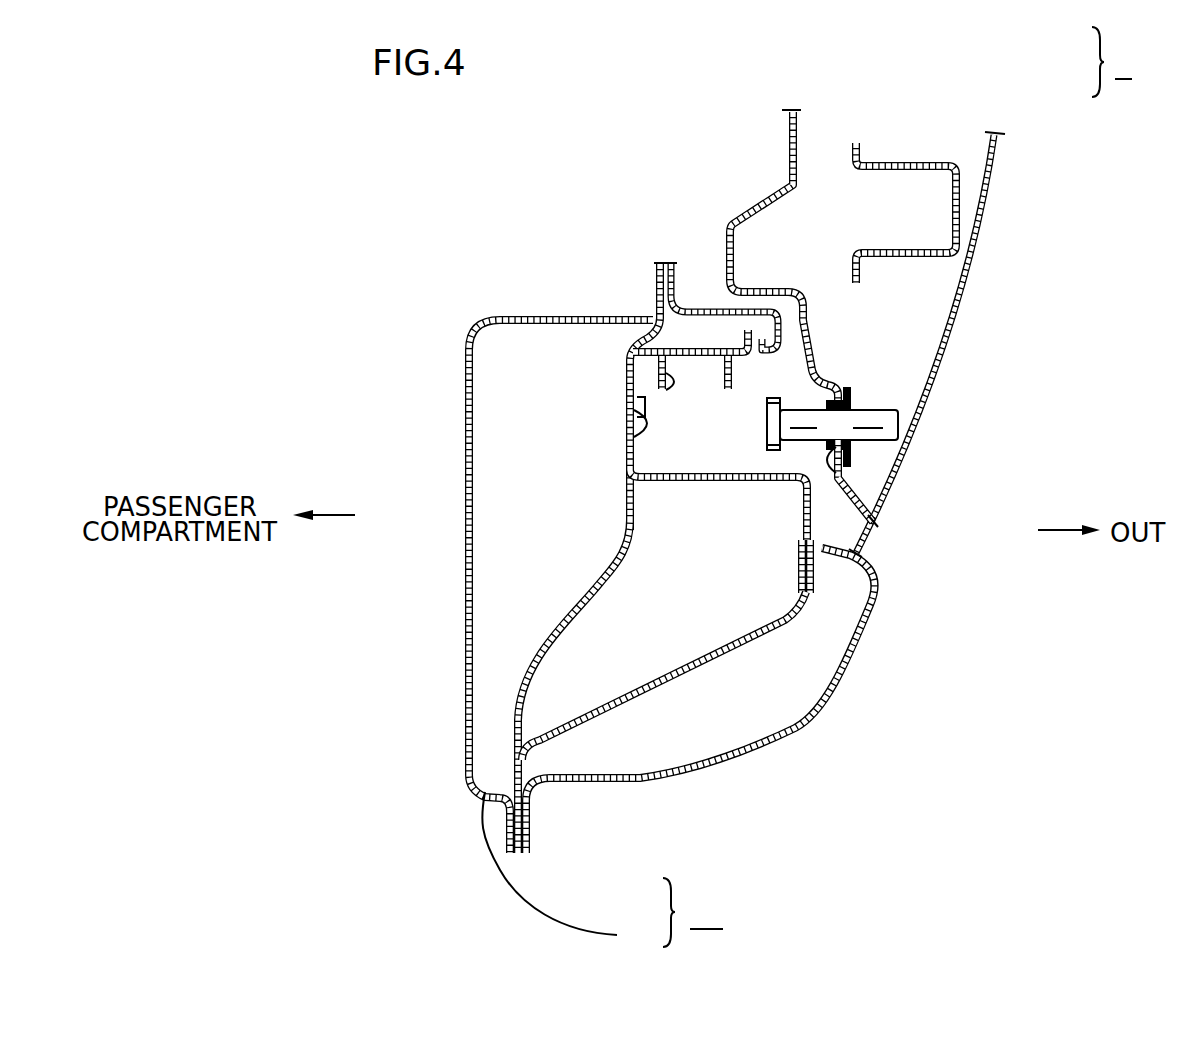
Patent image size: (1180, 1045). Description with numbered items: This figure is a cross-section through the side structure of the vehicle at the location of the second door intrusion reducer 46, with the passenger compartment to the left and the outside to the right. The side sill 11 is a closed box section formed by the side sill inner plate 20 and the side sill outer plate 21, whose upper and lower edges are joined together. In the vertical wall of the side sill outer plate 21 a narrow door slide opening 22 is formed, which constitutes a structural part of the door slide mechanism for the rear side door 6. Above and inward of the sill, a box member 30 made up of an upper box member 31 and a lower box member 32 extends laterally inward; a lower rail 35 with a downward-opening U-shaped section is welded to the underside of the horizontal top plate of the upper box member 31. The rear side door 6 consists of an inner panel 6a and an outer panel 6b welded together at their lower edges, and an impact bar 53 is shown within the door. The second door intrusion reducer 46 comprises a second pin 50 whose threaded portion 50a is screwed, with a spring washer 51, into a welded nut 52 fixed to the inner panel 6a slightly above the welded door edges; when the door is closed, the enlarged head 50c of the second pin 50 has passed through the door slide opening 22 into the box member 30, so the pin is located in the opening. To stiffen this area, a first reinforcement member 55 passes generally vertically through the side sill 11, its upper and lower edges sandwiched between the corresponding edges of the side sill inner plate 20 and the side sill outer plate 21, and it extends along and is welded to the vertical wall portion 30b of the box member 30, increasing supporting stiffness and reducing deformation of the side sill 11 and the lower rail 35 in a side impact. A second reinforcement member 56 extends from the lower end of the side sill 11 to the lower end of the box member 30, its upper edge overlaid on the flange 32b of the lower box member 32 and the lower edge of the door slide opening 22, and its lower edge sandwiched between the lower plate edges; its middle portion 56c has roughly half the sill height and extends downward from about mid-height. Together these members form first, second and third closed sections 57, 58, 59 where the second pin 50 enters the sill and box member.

The rear side door 6 is at (931, 291).
The inner panel 6a is at (797, 128).
The outer panel 6b is at (1003, 140).
The side sill 11 is at (630, 563).
The side sill inner plate 20 is at (569, 871).
The side sill outer plate 21 is at (706, 309).
The door slide opening 22 is at (785, 368).
The box member 30 is at (686, 554).
The upper box member 31 is at (652, 316).
The lower box member 32 is at (686, 428).
The vertical wall portion 30b is at (640, 428).
The flange 32b is at (862, 556).
The lower rail 35 is at (660, 388).
The second door intrusion reducer 46 is at (929, 452).
The second pin 50 is at (929, 452).
The threaded portion 50a is at (873, 421).
The enlarged head 50c is at (883, 522).
The spring washer 51 is at (850, 482).
The welded nut 52 is at (853, 453).
The impact bar 53 is at (918, 164).
The first reinforcement member 55 is at (600, 582).
The second reinforcement member 56 is at (698, 700).
The middle portion 56c is at (697, 660).
The first closed section 57 is at (517, 490).
The second closed section 58 is at (590, 652).
The third closed section 59 is at (780, 687).